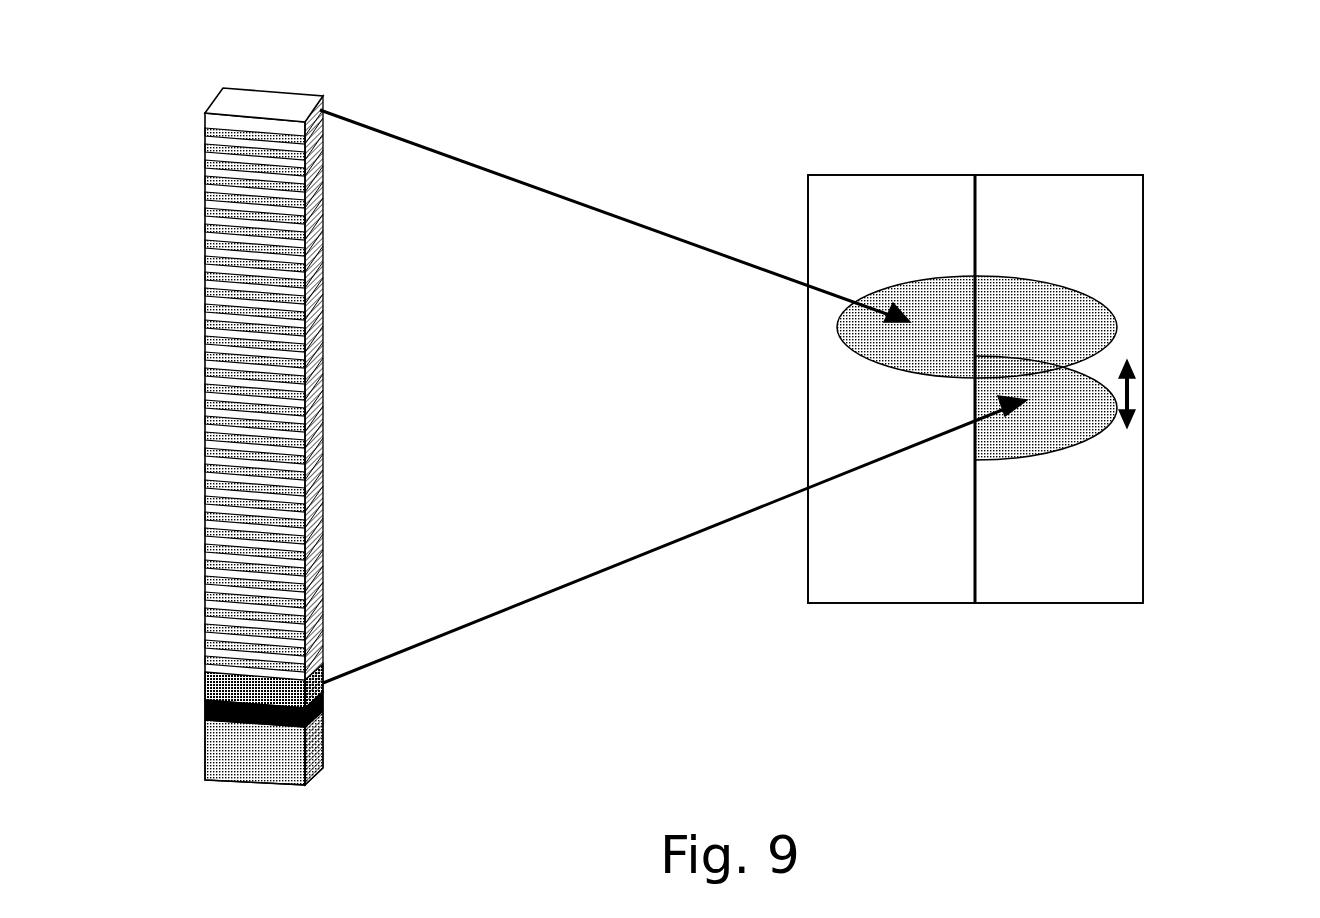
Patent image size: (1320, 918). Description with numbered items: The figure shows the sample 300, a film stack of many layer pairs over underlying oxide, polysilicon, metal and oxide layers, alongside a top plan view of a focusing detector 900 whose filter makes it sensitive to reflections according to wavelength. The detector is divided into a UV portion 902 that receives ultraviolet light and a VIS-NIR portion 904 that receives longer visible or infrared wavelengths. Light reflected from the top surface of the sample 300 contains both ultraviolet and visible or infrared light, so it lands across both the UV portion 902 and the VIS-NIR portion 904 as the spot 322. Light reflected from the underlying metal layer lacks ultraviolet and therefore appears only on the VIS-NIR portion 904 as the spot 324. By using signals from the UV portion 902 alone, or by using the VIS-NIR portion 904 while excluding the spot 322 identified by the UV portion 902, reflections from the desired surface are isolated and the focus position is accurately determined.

The sample 300 is at (157, 82).
The focusing detector 900 is at (992, 331).
The UV portion 902 is at (832, 192).
The VIS-NIR portion 904 is at (1133, 226).
The spot 322 is at (850, 340).
The spot 324 is at (1103, 430).